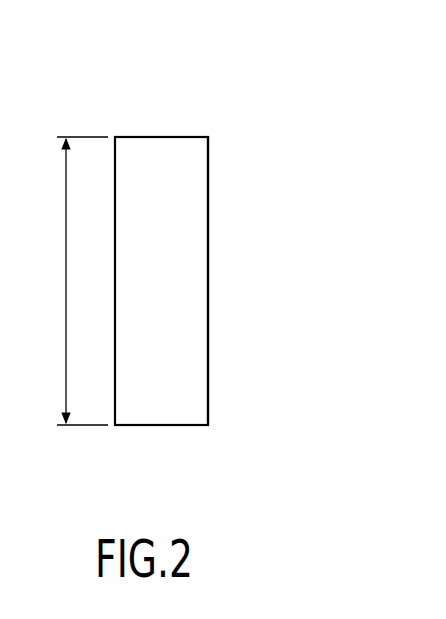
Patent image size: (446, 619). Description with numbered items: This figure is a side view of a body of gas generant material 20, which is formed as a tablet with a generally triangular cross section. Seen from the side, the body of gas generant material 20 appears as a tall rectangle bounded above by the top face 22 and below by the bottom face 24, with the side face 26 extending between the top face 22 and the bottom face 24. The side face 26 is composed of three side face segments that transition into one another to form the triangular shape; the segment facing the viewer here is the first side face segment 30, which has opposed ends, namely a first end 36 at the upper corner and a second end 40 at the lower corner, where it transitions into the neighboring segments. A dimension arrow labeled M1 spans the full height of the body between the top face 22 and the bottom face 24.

The body of gas generant material 20 is at (233, 117).
The top face 22 is at (208, 276).
The bottom face 24 is at (114, 148).
The side face 26 is at (180, 409).
The first side face segment 30 is at (164, 157).
The first end of first side face segment 36 is at (213, 146).
The second end of first side face segment 40 is at (213, 417).
The height dimension M1 is at (69, 281).